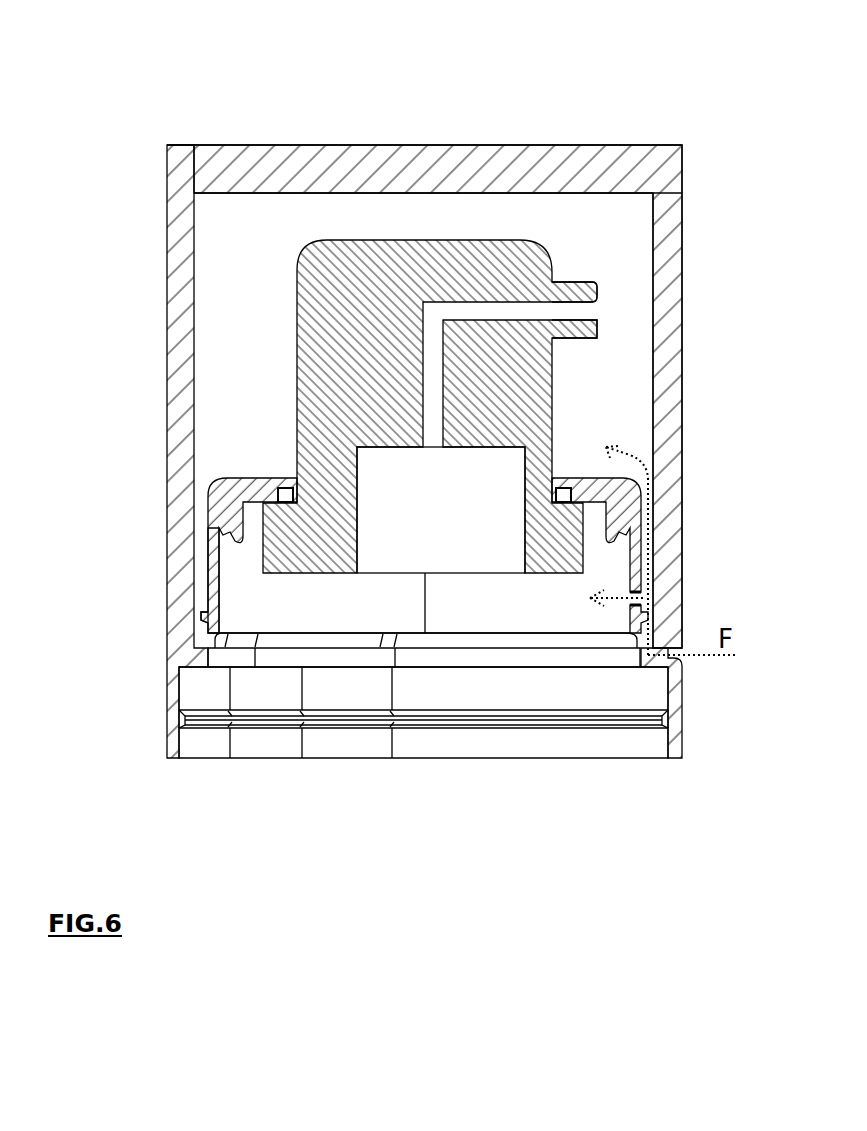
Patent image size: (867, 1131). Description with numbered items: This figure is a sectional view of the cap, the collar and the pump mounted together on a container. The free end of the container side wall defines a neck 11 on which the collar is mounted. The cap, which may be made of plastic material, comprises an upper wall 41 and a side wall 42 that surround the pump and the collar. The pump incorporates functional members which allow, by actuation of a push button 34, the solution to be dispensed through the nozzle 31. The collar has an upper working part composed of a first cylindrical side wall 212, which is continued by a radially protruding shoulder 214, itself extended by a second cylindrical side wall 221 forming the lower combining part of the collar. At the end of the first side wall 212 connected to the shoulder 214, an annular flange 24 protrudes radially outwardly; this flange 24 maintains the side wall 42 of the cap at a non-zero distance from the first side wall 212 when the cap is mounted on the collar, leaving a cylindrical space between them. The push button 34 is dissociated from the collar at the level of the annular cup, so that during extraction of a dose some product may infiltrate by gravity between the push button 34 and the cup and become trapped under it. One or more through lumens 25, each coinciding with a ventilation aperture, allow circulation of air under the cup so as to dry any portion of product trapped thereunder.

The neck 11 is at (346, 745).
The second cylindrical side wall 221 is at (170, 722).
The annular flange 24 is at (200, 627).
The first cylindrical side wall 212 is at (218, 562).
The shoulder 214 is at (252, 485).
The through lumen 25 is at (635, 590).
The nozzle 31 is at (573, 287).
The push button 34 is at (463, 255).
The upper wall 41 is at (386, 158).
The side wall 42 is at (178, 257).